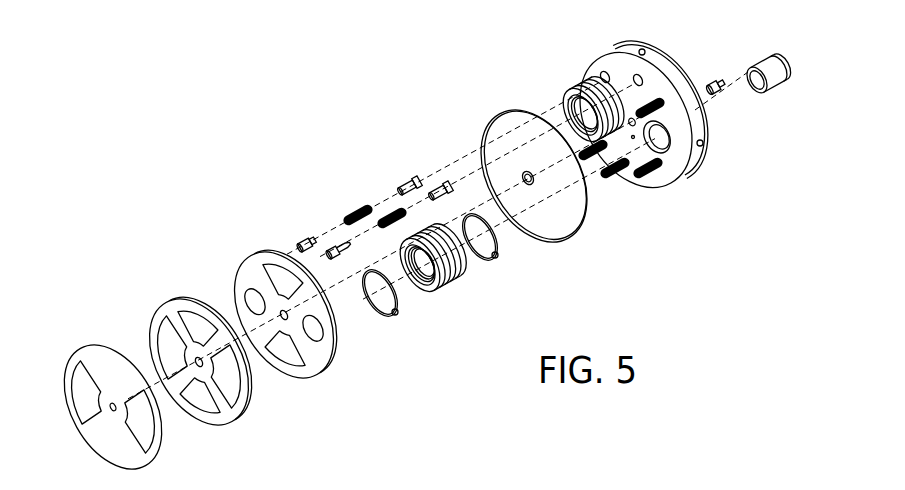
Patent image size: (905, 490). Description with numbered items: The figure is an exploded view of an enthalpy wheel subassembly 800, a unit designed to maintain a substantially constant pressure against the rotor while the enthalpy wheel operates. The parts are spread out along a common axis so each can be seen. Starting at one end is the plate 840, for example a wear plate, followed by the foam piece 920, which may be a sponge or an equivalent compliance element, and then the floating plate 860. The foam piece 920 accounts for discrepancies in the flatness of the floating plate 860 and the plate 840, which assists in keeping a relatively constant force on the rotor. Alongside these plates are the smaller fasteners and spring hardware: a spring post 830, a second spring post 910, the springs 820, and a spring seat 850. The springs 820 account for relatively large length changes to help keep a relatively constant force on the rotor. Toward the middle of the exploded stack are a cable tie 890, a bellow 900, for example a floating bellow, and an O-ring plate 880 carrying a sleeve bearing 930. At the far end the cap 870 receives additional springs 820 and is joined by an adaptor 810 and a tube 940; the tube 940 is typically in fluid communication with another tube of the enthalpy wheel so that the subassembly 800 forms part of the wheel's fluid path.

The subassembly 800 is at (391, 98).
The adaptor 810 is at (712, 78).
The springs 820 is at (387, 210).
The spring post 830 is at (300, 242).
The plate 840 is at (88, 352).
The spring seat 850 is at (413, 175).
The floating plate 860 is at (323, 367).
The cap 870 is at (678, 190).
The O-ring plate 880 is at (575, 237).
The cable tie 890 is at (395, 315).
The bellow 900 is at (443, 287).
The spring post 910 is at (333, 245).
The foam piece 920 is at (230, 422).
The sleeve bearing 930 is at (525, 173).
The tube 940 is at (777, 85).